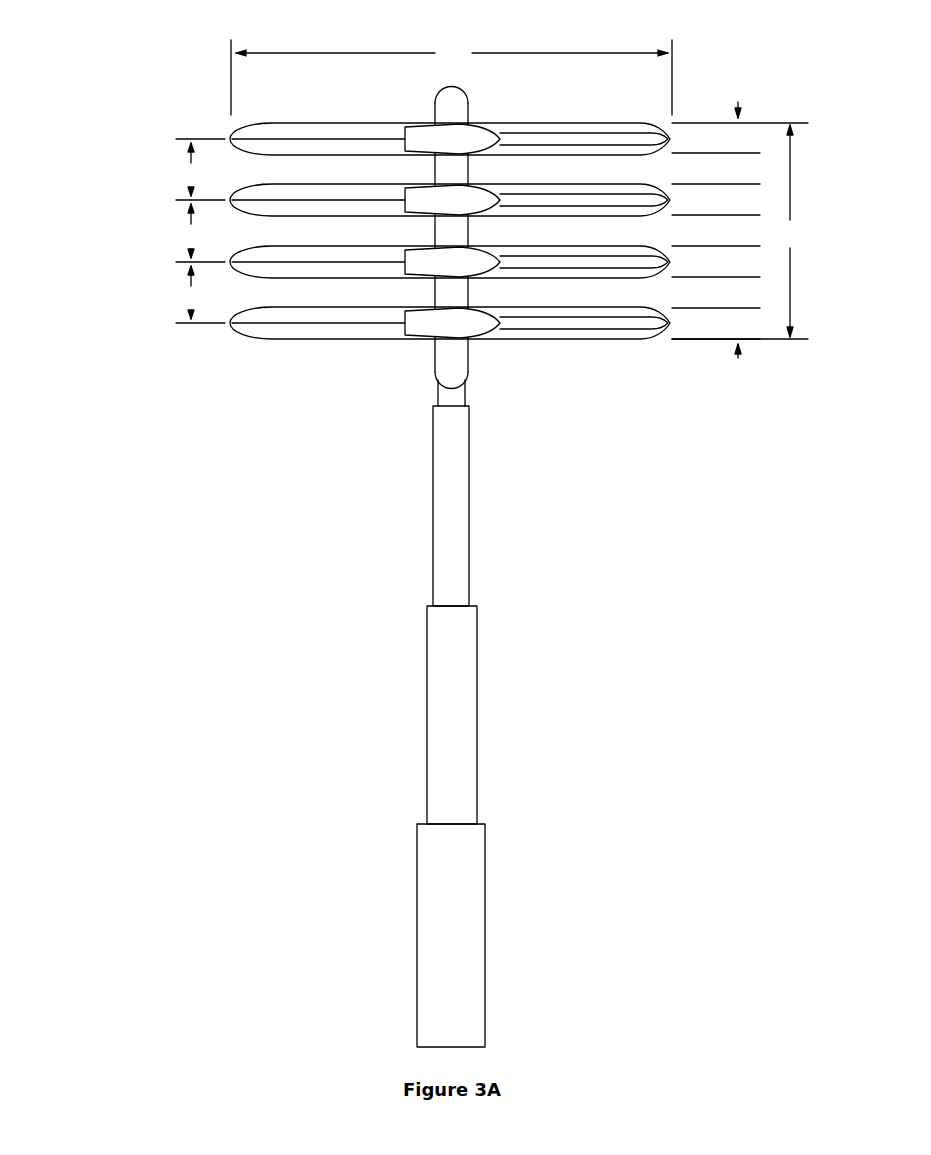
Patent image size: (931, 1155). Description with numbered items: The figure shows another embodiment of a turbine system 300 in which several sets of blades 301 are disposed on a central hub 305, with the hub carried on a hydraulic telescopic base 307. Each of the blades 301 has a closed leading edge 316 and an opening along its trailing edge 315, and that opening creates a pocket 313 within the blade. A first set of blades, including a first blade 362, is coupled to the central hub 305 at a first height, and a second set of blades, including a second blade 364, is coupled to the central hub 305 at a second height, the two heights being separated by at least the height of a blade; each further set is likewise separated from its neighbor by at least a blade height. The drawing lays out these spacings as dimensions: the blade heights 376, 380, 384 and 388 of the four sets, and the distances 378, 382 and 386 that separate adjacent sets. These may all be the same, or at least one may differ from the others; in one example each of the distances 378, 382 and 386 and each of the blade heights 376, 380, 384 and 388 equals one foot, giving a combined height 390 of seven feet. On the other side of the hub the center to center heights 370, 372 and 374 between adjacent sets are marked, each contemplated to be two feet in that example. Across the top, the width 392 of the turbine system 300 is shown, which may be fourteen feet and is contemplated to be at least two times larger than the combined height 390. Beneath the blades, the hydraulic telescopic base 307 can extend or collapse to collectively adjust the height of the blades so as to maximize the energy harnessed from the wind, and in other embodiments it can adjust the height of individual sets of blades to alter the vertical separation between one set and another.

The turbine system 300 is at (128, 98).
The blades 301 is at (315, 340).
The central hub 305 is at (467, 103).
The hydraulic telescopic base 307 is at (427, 657).
The pocket 313 is at (558, 323).
The trailing edge 315 is at (613, 332).
The leading edge 316 is at (514, 330).
The first blade 362 is at (360, 123).
The second blade 364 is at (270, 216).
The center to center height 370 is at (199, 169).
The center to center height 372 is at (199, 233).
The center to center height 374 is at (199, 294).
The blade height 376 is at (716, 145).
The distance 378 is at (716, 176).
The blade height 380 is at (716, 207).
The distance 382 is at (716, 238).
The blade height 384 is at (716, 269).
The distance 386 is at (716, 300).
The blade height 388 is at (716, 331).
The combined height 390 is at (740, 230).
The width 392 is at (451, 77).